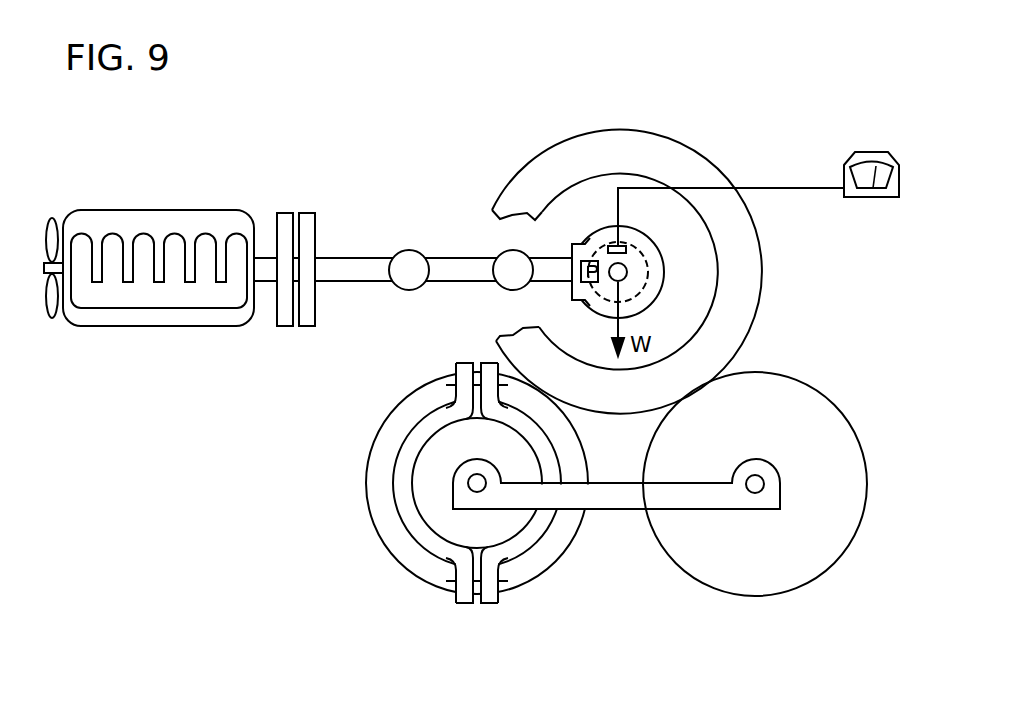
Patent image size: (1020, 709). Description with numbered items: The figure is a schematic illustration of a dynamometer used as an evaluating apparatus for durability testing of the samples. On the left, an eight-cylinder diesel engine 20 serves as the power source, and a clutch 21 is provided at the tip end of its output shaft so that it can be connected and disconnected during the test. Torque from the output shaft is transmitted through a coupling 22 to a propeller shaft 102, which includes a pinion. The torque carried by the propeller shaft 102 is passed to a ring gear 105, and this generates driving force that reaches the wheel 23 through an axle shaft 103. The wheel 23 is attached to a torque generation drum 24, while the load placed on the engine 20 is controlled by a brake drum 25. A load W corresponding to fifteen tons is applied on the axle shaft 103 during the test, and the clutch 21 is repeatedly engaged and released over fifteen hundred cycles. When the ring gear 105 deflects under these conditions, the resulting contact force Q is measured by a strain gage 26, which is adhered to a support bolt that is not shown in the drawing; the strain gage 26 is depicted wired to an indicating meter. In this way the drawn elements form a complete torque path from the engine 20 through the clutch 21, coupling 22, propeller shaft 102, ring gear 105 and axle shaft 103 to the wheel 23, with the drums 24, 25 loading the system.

The diesel engine 20 is at (138, 228).
The clutch 21 is at (296, 211).
The coupling 22 is at (508, 279).
The wheel 23 is at (683, 155).
The torque generation drum 24 is at (378, 498).
The brake drum 25 is at (432, 502).
The strain gage 26 is at (608, 243).
The propeller shaft 102 is at (548, 267).
The axle shaft 103 is at (628, 274).
The ring gear 105 is at (648, 272).